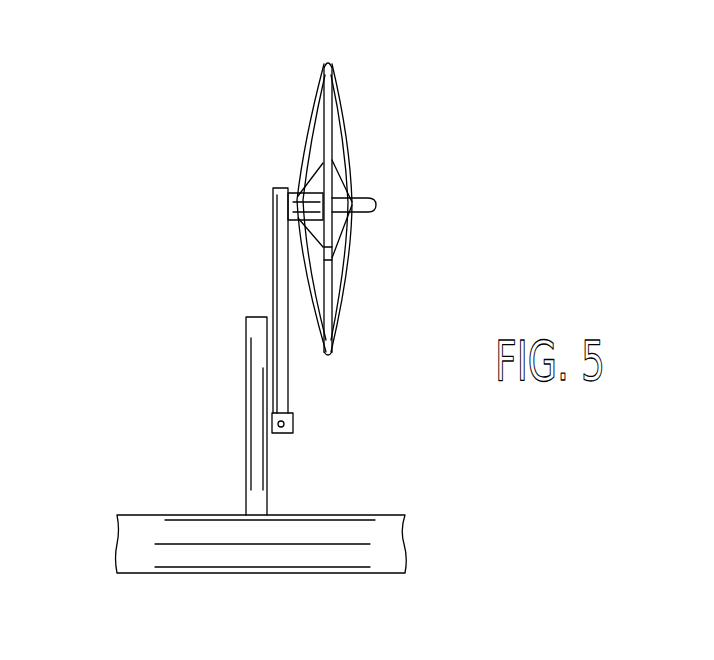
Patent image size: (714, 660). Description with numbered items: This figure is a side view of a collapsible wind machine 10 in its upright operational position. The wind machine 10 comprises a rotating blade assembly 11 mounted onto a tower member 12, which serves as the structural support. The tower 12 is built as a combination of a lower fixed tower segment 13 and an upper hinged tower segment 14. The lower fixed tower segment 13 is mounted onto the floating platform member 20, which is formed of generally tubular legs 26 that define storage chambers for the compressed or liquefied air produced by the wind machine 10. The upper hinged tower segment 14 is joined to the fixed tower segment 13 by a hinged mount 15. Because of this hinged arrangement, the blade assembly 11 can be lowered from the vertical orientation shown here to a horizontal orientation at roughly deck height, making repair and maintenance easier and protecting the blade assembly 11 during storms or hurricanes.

The wind machine 10 is at (274, 318).
The rotating blade assembly 11 is at (352, 241).
The tower member 12 is at (240, 209).
The lower fixed tower segment 13 is at (223, 416).
The upper hinged tower segment 14 is at (317, 300).
The hinged mount 15 is at (313, 435).
The floating platform member 20 is at (247, 445).
The legs 26 is at (290, 517).